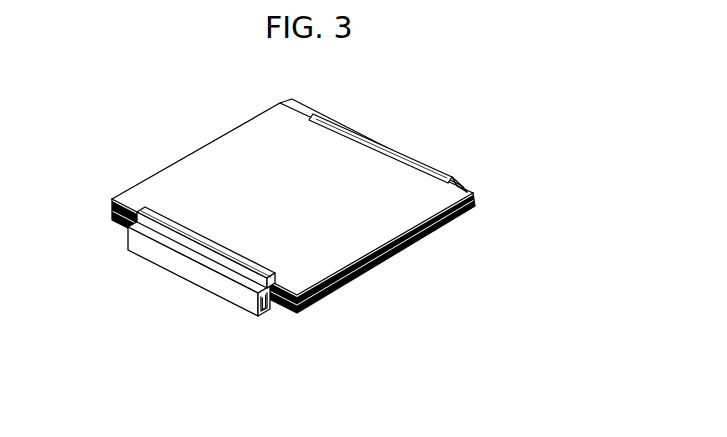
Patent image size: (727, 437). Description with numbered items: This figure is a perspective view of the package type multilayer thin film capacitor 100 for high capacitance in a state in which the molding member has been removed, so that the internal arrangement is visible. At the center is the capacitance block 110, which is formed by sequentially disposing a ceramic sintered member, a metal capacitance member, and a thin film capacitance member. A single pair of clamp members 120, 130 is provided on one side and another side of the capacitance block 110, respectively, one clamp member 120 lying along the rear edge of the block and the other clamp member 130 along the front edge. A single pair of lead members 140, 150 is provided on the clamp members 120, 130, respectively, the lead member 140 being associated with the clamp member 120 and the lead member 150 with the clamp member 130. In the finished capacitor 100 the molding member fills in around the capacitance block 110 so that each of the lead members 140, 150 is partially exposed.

The package type multilayer thin film capacitor 100 is at (229, 99).
The capacitance block 110 is at (148, 166).
The clamp member 120 is at (360, 132).
The clamp member 130 is at (200, 237).
The lead member 140 is at (463, 182).
The lead member 150 is at (220, 288).